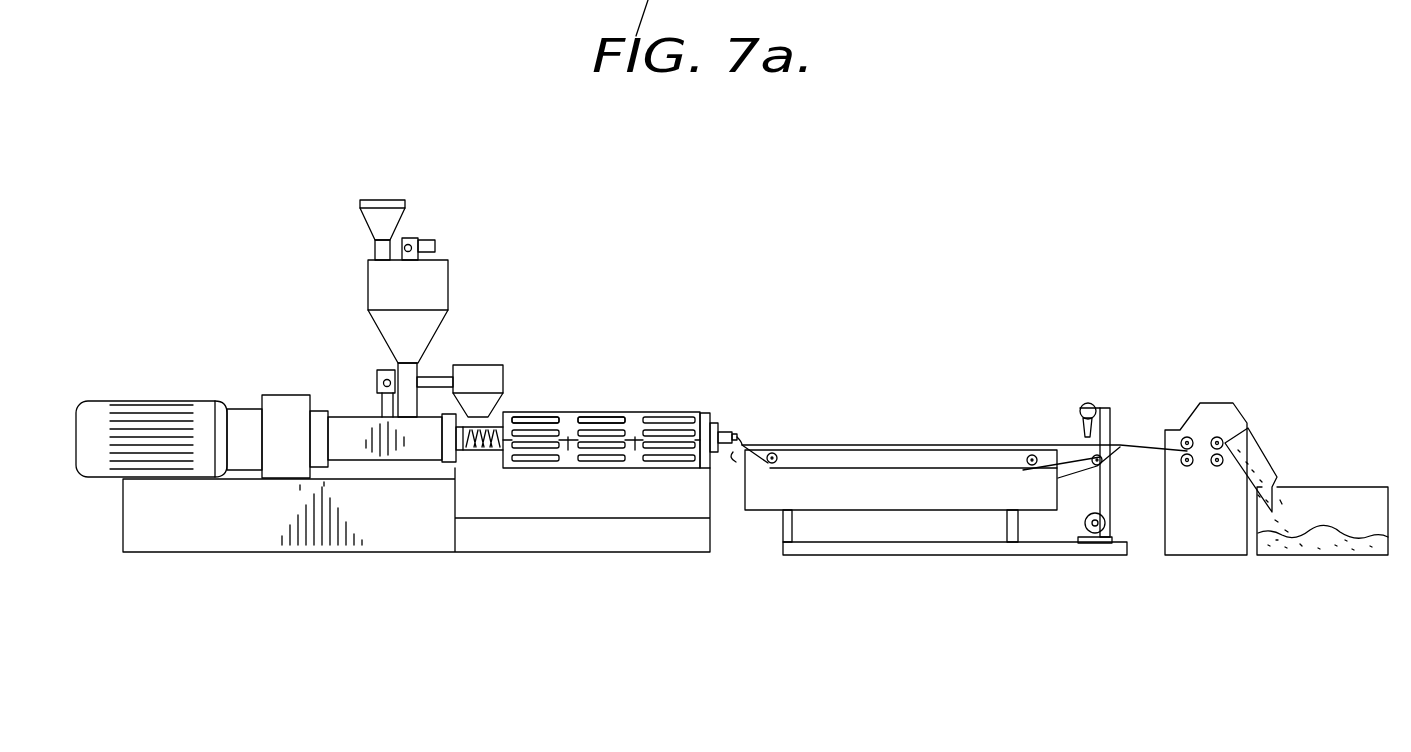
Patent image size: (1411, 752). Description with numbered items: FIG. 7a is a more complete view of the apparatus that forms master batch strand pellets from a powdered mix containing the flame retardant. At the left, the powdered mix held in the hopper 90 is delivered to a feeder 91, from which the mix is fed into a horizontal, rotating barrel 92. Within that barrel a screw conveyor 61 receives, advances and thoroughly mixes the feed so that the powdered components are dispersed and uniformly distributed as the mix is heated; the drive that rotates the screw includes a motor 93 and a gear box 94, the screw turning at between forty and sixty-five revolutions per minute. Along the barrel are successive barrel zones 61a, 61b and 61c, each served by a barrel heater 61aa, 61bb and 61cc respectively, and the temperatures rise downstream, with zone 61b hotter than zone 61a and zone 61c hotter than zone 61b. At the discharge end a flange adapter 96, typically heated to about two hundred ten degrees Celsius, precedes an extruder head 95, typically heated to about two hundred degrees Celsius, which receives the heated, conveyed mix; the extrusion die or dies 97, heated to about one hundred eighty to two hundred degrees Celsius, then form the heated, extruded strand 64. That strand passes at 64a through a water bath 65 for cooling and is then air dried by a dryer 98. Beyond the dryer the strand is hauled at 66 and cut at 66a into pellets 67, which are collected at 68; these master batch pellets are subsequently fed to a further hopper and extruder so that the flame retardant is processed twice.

The hopper 90 is at (440, 280).
The feeder 91 is at (481, 375).
The barrel 92 is at (486, 452).
The motor 93 is at (164, 401).
The gear box 94 is at (283, 410).
The extruder head 95 is at (728, 430).
The flange adapter 96 is at (721, 455).
The extrusion die 97 is at (735, 434).
The dryer 98 is at (1080, 430).
The screw conveyor 61 is at (450, 452).
The first barrel zone 61a is at (570, 458).
The second barrel zone 61b is at (637, 458).
The third barrel zone 61c is at (715, 427).
The first barrel heater 61aa is at (537, 417).
The second barrel heater 61bb is at (605, 417).
The third barrel heater 61cc is at (672, 417).
The strand 64 is at (735, 455).
The strand passage through water bath 64a is at (948, 467).
The water bath 65 is at (922, 493).
The hauling means 66 is at (1182, 437).
The cutting means 66a is at (1240, 437).
The pellets 67 is at (1267, 470).
The pellet collection 68 is at (1313, 543).